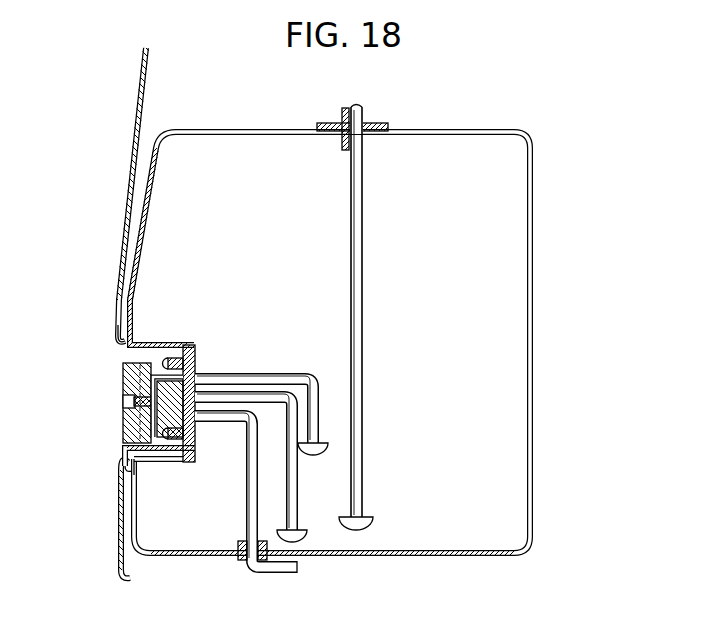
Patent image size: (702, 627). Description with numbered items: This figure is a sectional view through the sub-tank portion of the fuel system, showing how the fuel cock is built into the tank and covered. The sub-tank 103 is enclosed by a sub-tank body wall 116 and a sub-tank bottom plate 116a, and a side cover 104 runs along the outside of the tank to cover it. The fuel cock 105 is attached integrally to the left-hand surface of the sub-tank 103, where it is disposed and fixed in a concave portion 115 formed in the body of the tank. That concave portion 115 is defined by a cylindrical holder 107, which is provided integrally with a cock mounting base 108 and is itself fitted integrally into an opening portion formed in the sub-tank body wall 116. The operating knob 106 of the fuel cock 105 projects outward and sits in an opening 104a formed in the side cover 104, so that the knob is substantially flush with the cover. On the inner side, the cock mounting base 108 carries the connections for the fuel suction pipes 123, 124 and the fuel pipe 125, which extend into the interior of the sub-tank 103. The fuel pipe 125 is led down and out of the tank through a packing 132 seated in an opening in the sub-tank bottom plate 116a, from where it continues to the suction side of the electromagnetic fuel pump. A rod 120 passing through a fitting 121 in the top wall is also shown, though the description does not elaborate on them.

The sub-tank 103 is at (440, 268).
The side cover 104 is at (128, 183).
The opening 104a is at (120, 340).
The fuel cock 105 is at (113, 385).
The operating knob 106 is at (122, 424).
The cylindrical holder 107 is at (180, 462).
The cock mounting base 108 is at (194, 362).
The concave portion 115 is at (152, 462).
The sub-tank body wall 116 is at (144, 228).
The sub-tank bottom plate 116a is at (398, 549).
The rod 120 is at (364, 410).
The bushing 121 is at (340, 140).
The fuel suction pipe 123 is at (291, 373).
The fuel suction pipe 124 is at (297, 500).
The fuel pipe 125 is at (266, 575).
The packing 132 is at (244, 561).